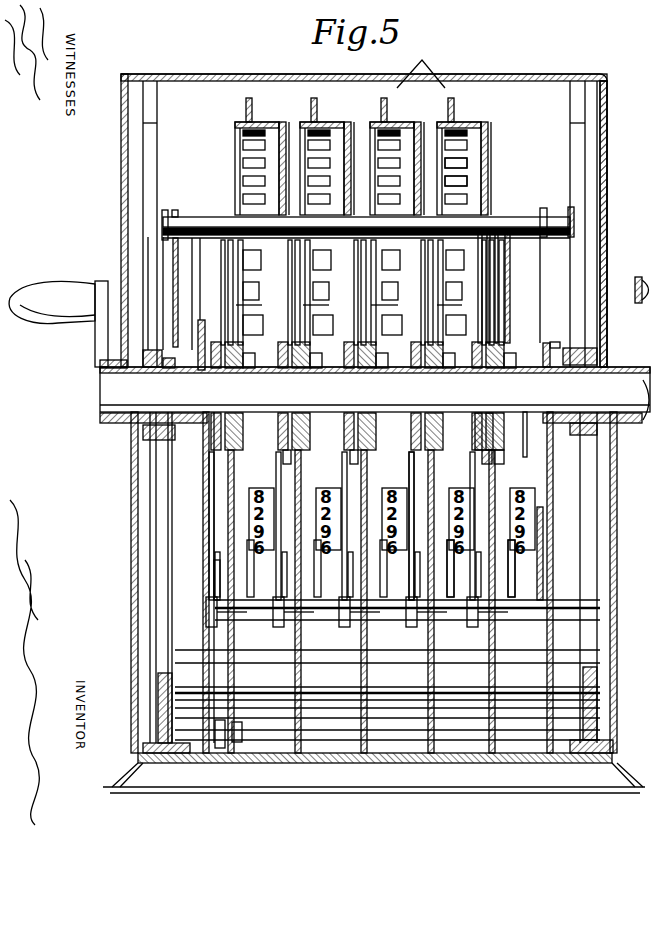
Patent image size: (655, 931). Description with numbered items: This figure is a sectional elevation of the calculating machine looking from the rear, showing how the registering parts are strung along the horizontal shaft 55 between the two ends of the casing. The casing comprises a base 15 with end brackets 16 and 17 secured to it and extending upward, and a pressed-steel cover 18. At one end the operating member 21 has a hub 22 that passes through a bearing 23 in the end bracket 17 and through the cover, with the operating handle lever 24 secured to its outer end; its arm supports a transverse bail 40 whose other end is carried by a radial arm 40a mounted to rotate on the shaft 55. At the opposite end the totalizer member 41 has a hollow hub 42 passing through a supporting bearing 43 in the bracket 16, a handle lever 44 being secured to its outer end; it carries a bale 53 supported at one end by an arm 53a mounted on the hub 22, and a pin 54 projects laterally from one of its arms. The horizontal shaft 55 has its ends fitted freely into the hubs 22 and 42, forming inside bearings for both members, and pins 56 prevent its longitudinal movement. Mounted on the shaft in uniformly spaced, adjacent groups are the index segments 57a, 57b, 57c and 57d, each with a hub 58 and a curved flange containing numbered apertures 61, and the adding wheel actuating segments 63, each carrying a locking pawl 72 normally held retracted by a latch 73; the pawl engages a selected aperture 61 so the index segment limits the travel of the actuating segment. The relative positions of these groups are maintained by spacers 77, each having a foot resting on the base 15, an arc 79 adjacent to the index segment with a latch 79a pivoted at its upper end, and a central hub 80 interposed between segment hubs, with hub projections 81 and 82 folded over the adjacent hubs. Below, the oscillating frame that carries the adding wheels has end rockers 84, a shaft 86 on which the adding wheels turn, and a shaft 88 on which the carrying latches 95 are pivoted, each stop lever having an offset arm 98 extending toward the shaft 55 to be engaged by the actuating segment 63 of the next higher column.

The base 15 is at (247, 763).
The end bracket 16 is at (587, 512).
The end bracket 17 is at (165, 548).
The cover 18 is at (608, 192).
The operating member 21 is at (205, 462).
The hub 22 is at (138, 462).
The bearing 23 is at (158, 450).
The operating handle lever 24 is at (44, 297).
The transverse bail 40 is at (492, 246).
The radial arm 40a is at (511, 306).
The totalizer member 41 is at (545, 352).
The hollow hub 42 is at (595, 440).
The supporting bearing 43 is at (553, 445).
The handle lever 44 is at (650, 270).
The bale 53 is at (191, 215).
The arm 53a is at (176, 270).
The pin 54 is at (553, 342).
The horizontal shaft 55 is at (525, 402).
The pins 56 is at (210, 393).
The index segment 57a is at (279, 110).
The index segment 57b is at (345, 110).
The index segment 57c is at (410, 110).
The index segment 57d is at (485, 110).
The hub 58 is at (287, 452).
The apertures 61 is at (462, 178).
The adding wheel actuating segment 63 is at (353, 260).
The locking pawl 72 is at (357, 288).
The latch 73 is at (354, 308).
The spacers 77 is at (498, 745).
The arc 79 is at (287, 126).
The latch 79a is at (421, 65).
The central hub 80 is at (486, 449).
The hub projection 81 is at (506, 449).
The hub projection 82 is at (477, 438).
The end rockers 84 is at (216, 568).
The shaft 86 is at (413, 520).
The shaft 88 is at (330, 739).
The latch 95 is at (490, 674).
The offset arm 98 is at (450, 560).